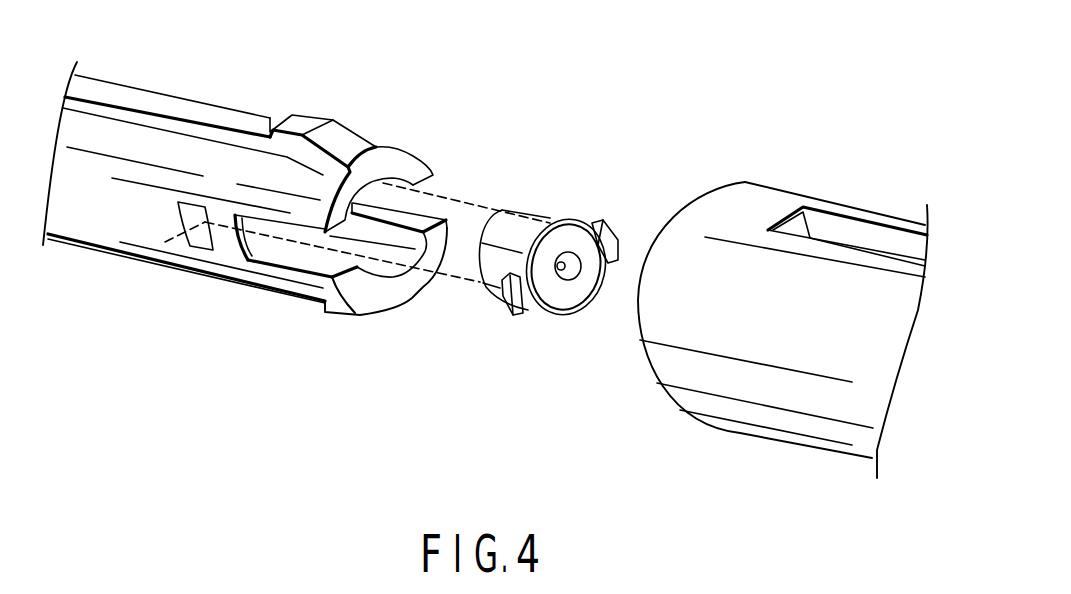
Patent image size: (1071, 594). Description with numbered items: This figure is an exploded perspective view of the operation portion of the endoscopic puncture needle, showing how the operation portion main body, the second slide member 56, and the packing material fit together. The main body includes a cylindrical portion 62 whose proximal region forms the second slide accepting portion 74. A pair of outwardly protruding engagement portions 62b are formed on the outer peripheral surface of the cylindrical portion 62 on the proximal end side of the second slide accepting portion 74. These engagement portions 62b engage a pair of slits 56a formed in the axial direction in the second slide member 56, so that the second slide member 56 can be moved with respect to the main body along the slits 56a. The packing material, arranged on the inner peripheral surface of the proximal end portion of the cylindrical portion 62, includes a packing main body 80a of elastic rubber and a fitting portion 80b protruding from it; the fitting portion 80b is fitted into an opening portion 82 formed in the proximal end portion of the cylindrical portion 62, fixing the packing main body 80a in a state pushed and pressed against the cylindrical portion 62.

The second slide member 56 is at (737, 416).
The slits 56a is at (863, 237).
The cylindrical portion 62 is at (88, 236).
The engagement portions 62b is at (303, 118).
The second slide accepting portion 74 is at (163, 100).
The packing main body 80a is at (513, 230).
The fitting portion 80b is at (610, 240).
The opening portion 82 is at (190, 252).